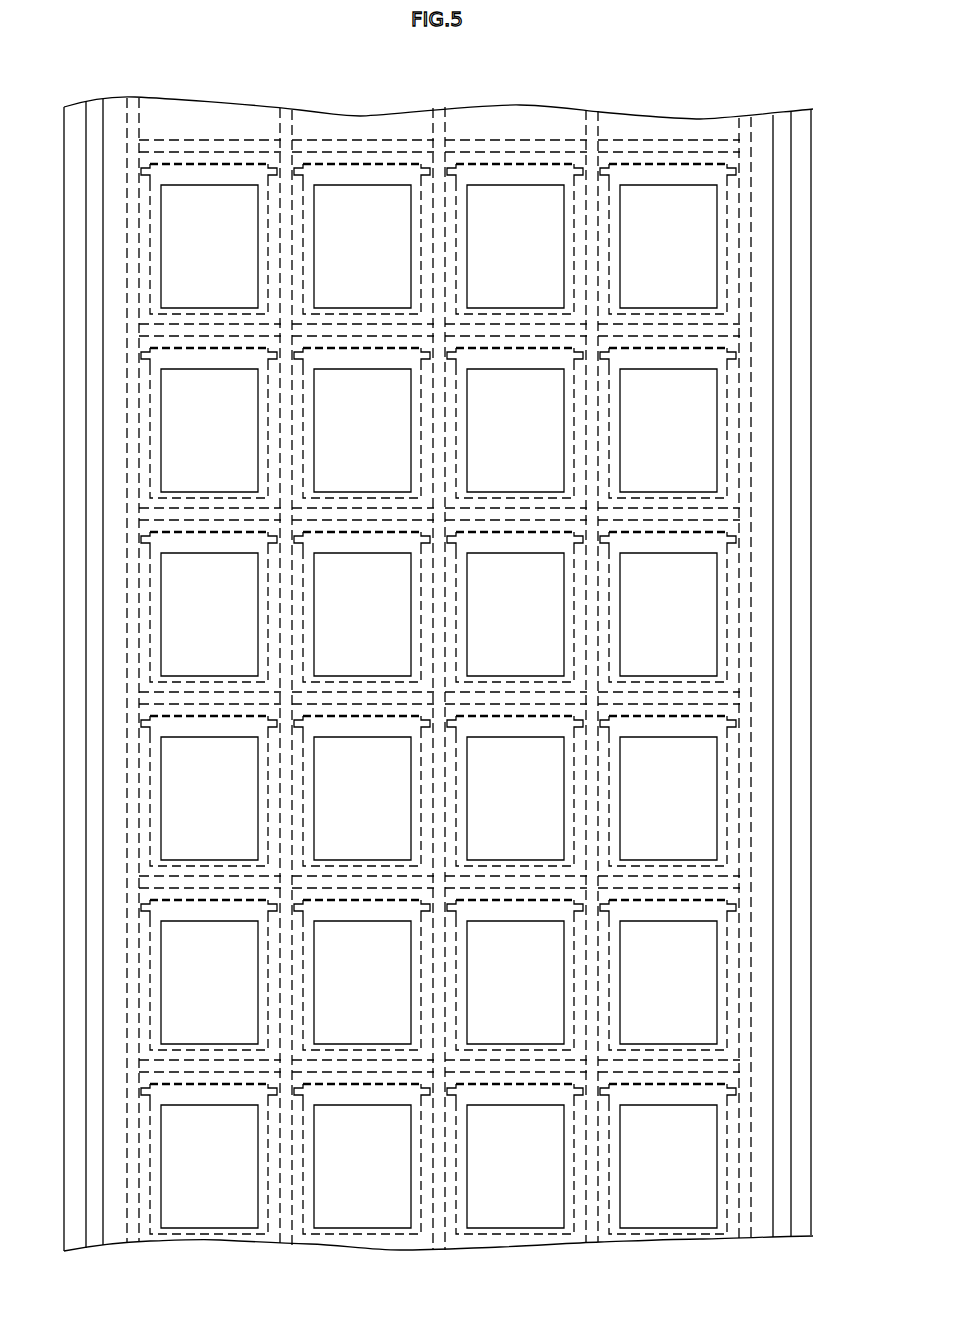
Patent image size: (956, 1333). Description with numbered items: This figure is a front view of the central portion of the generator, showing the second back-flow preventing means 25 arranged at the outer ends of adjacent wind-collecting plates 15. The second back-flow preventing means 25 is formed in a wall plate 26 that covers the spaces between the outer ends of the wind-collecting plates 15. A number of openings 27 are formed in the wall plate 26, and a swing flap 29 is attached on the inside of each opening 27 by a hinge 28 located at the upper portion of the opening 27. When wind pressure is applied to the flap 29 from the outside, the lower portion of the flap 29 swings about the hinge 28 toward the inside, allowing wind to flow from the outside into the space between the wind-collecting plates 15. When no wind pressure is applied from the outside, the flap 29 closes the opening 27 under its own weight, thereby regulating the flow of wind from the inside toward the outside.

The wind-collecting plate 15 is at (90, 108).
The second back-flow preventing means 25 is at (660, 112).
The wall plate 26 is at (489, 118).
The opening 27 is at (403, 231).
The hinge 28 is at (612, 340).
The swing flap 29 is at (568, 811).